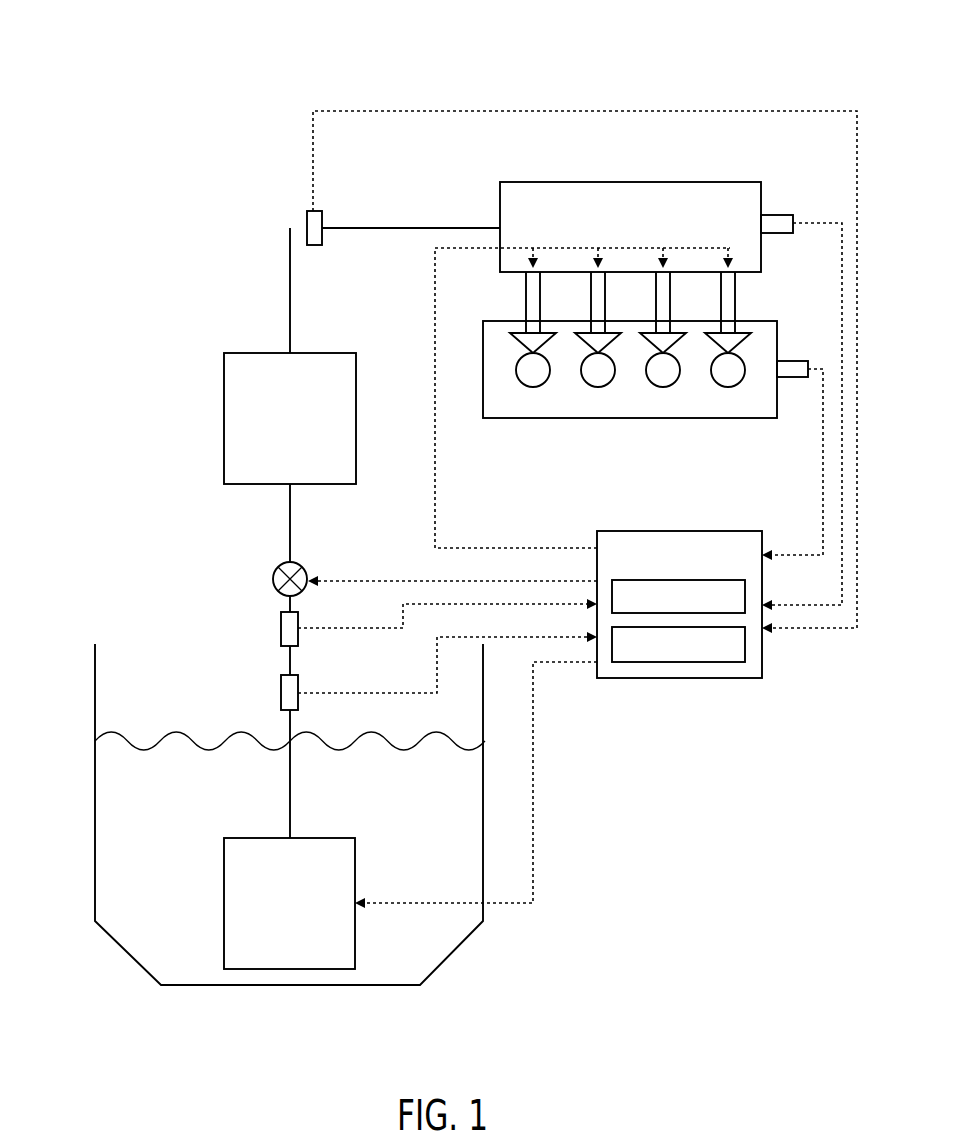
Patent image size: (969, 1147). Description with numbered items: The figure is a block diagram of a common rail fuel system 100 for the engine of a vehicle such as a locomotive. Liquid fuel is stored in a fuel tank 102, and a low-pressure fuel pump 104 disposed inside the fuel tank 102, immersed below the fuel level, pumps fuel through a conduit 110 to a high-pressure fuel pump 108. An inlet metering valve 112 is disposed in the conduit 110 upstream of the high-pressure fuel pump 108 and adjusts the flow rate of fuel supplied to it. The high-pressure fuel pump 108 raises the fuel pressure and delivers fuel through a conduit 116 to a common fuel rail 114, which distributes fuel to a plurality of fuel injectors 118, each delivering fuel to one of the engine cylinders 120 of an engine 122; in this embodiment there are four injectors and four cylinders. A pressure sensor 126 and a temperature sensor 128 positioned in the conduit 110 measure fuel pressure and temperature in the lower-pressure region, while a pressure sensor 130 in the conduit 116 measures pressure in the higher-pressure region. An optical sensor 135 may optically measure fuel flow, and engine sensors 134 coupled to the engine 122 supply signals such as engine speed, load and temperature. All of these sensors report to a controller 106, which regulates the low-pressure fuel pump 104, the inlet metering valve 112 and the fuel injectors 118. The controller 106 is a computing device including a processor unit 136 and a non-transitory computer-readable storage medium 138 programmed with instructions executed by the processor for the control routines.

The common rail fuel system 100 is at (128, 40).
The fuel tank 102 is at (95, 682).
The low-pressure fuel pump 104 is at (304, 915).
The controller 106 is at (693, 564).
The high-pressure fuel pump 108 is at (304, 430).
The conduit 110 is at (290, 804).
The inlet metering valve 112 is at (272, 572).
The common fuel rail 114 is at (644, 239).
The conduit 116 is at (487, 227).
The fuel injectors 118 is at (721, 300).
The engine cylinders 120 is at (535, 387).
The engine 122 is at (628, 418).
The pressure sensor 126 is at (300, 677).
The temperature sensor 128 is at (300, 613).
The pressure sensor 130 is at (308, 210).
The engine sensors 134 is at (780, 361).
The optical sensor 135 is at (775, 215).
The processor unit 136 is at (692, 608).
The computer-readable storage medium 138 is at (692, 657).